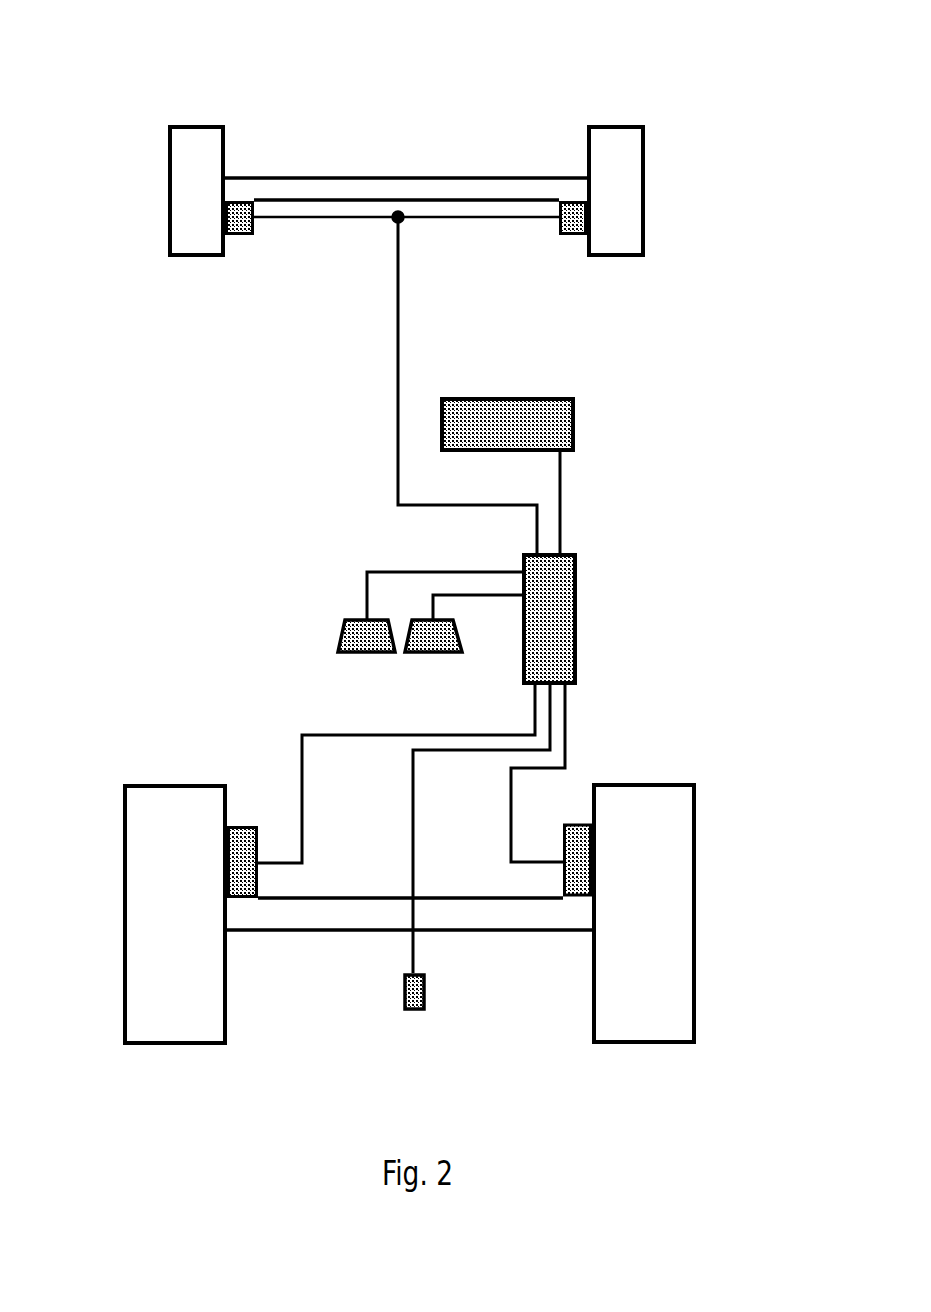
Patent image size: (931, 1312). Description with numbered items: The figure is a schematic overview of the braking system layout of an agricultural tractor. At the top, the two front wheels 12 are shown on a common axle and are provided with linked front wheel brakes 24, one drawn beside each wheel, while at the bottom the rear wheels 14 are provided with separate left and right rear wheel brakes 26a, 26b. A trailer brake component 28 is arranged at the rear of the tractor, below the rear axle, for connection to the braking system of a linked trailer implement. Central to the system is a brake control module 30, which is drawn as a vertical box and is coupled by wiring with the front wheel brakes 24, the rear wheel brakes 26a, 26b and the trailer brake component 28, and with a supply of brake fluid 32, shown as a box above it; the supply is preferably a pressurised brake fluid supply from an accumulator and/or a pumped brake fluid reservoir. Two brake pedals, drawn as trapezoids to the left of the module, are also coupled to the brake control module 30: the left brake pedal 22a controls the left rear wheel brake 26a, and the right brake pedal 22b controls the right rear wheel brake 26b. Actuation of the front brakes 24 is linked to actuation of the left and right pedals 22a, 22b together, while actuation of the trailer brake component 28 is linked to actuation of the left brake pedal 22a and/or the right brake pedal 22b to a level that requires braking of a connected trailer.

The front wheels 12 is at (185, 172).
The rear wheels 14 is at (160, 927).
The left brake pedal 22a is at (366, 656).
The right brake pedal 22b is at (433, 656).
The front wheel brakes 24 is at (406, 240).
The left rear wheel brake 26a is at (257, 842).
The right rear wheel brake 26b is at (561, 840).
The trailer brake component 28 is at (435, 992).
The brake control module 30 is at (573, 619).
The supply of brake fluid 32 is at (533, 424).